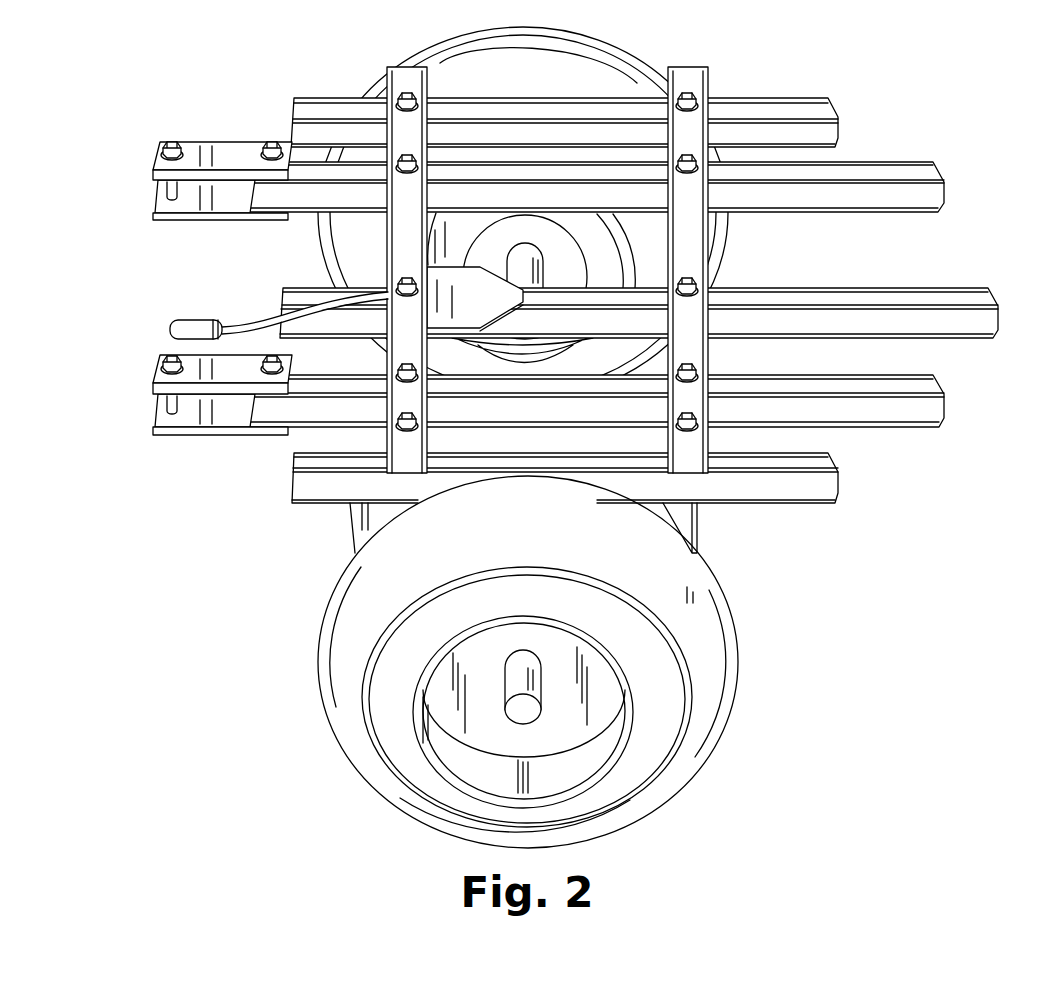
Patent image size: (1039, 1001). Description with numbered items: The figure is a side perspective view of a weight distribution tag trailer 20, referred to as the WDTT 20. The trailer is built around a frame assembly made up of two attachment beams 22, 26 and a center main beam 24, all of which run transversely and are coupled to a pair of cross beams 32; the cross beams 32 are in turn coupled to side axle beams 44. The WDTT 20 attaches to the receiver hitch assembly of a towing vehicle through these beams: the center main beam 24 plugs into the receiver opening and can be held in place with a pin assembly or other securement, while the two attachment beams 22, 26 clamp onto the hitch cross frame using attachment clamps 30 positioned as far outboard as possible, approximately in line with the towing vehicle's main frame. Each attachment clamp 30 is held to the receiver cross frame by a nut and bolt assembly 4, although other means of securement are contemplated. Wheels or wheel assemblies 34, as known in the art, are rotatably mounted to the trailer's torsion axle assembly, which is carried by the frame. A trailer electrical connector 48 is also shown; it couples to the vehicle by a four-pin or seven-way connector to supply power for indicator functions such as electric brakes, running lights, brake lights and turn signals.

The nut and bolt assembly 4 is at (158, 217).
The weight distribution tag trailer 20 is at (208, 289).
The attachment beam 22 is at (897, 413).
The center main beam 24 is at (913, 297).
The attachment beam 26 is at (878, 167).
The attachment clamp 30 is at (189, 142).
The cross beam 32 is at (400, 255).
The wheel assembly 34 is at (588, 53).
The side axle beam 44 is at (778, 103).
The trailer electrical connector 48 is at (170, 324).